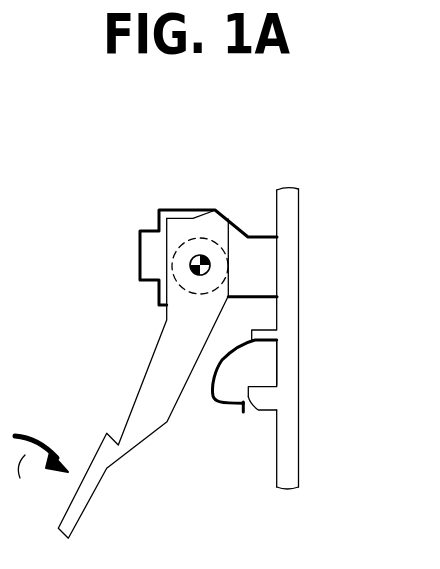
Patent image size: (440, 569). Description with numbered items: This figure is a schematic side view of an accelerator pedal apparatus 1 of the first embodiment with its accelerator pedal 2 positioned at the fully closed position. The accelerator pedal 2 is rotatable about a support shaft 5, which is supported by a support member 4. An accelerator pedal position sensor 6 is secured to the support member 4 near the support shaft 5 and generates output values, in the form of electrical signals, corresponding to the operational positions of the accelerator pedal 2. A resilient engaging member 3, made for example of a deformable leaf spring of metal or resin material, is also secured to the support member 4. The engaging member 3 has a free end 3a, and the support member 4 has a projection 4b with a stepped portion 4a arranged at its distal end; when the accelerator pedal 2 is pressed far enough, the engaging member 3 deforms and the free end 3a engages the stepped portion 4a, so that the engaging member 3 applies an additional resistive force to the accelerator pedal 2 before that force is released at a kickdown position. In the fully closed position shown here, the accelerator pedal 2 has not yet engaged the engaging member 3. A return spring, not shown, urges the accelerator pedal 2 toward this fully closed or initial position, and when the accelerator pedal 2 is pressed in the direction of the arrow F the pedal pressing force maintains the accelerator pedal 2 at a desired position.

The accelerator pedal apparatus 1 is at (321, 141).
The accelerator pedal 2 is at (167, 371).
The resilient engaging member 3 is at (215, 407).
The free end 3a is at (245, 413).
The support member 4 is at (293, 227).
The stepped portion 4a is at (257, 407).
The projection 4b is at (263, 381).
The support shaft 5 is at (196, 257).
The accelerator pedal position sensor 6 is at (172, 211).